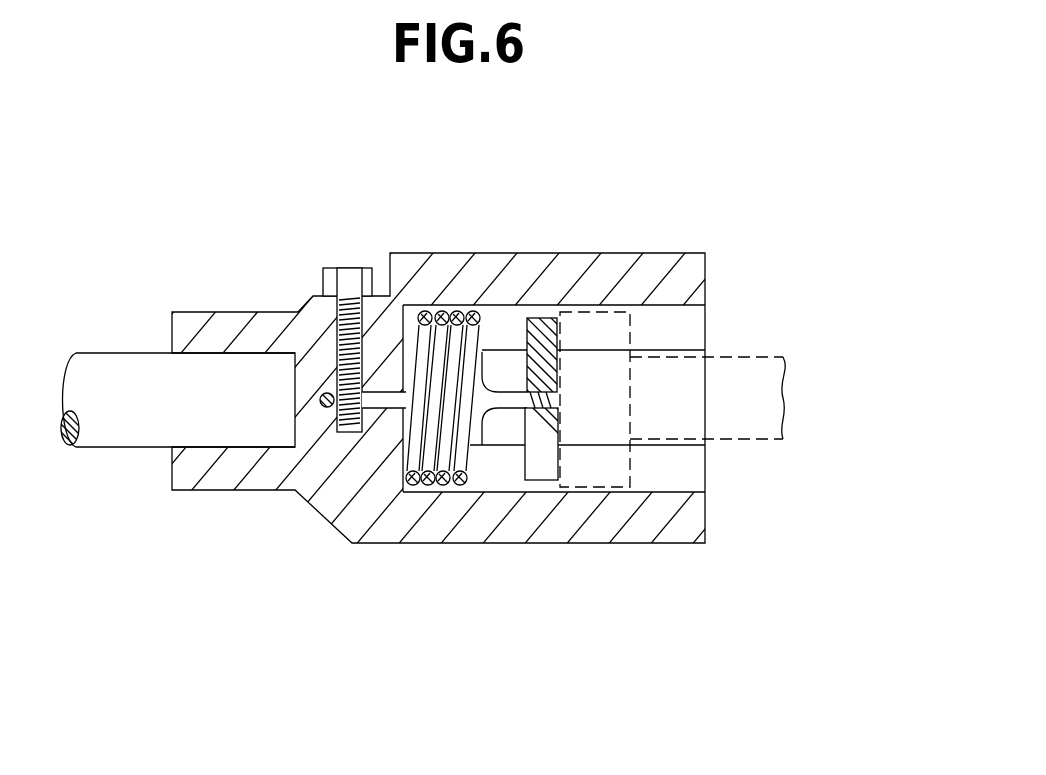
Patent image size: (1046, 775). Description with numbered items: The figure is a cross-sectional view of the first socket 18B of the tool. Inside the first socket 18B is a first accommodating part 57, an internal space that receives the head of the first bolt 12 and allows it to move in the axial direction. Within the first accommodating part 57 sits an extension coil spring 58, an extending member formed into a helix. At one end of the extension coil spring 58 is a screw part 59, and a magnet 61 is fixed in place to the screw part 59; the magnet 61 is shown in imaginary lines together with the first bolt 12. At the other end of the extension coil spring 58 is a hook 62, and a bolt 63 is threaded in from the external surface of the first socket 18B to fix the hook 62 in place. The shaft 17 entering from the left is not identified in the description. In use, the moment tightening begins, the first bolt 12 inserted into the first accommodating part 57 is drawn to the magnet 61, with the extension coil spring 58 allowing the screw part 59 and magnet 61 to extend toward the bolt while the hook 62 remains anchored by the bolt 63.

The first bolt 12 is at (766, 355).
The input rod 17 is at (98, 344).
The first socket 18B is at (534, 246).
The first accommodating part 57 is at (673, 307).
The extension coil spring 58 is at (443, 302).
The screw part 59 is at (533, 316).
The magnet 61 is at (561, 310).
The hook 62 is at (367, 395).
The bolt 63 is at (333, 268).